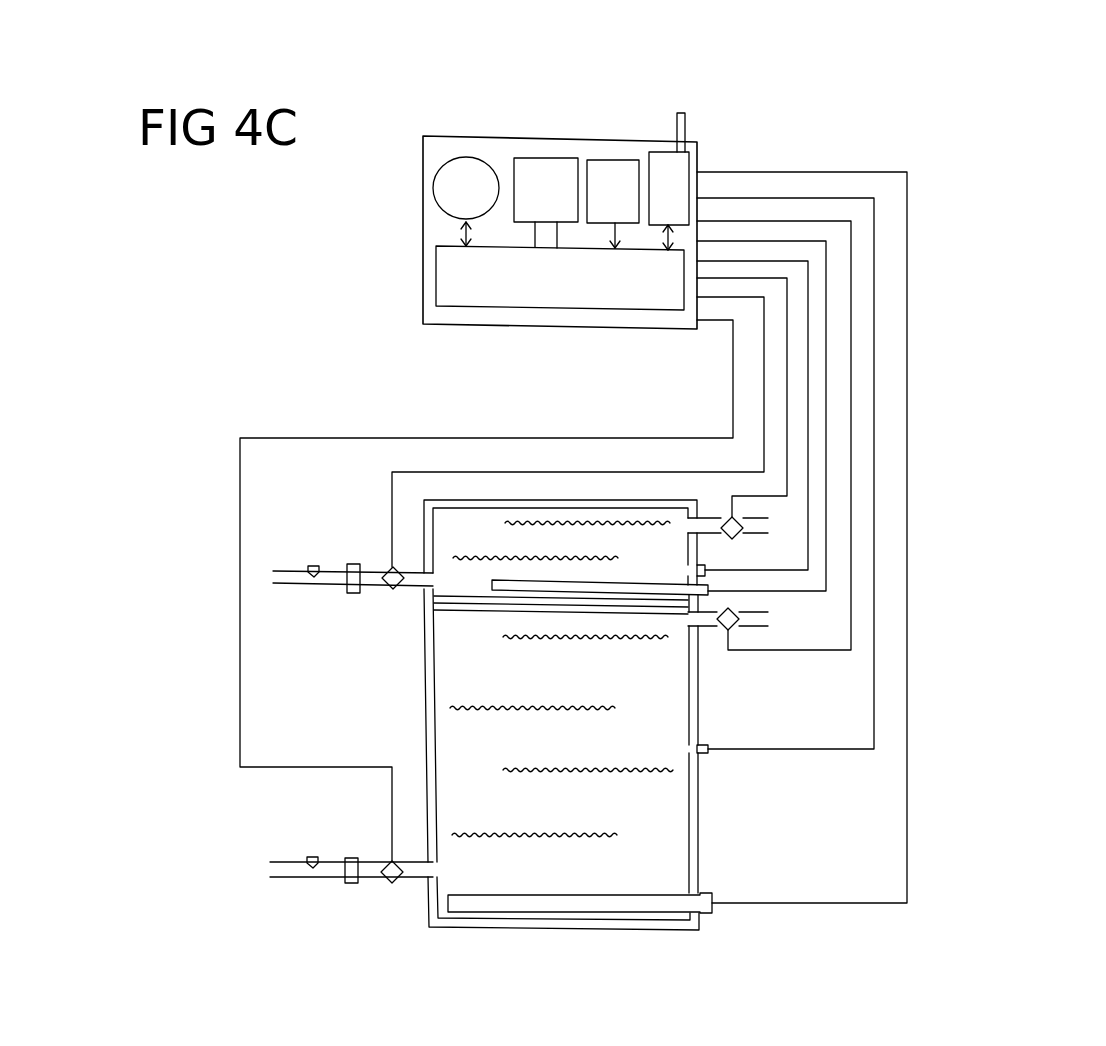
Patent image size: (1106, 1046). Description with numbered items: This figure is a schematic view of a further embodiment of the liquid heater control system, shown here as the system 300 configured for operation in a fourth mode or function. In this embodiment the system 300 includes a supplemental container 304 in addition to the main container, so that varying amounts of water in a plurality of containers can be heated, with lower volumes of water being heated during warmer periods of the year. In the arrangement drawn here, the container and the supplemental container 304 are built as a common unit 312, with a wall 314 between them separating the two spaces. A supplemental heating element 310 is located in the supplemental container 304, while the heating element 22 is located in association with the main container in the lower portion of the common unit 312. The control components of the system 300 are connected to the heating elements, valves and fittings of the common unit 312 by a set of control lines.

The system 300 is at (952, 200).
The supplemental container 304 is at (492, 537).
The supplemental heating element 310 is at (578, 588).
The common unit 312 is at (427, 682).
The wall 314 is at (463, 598).
The heating element 22 is at (648, 903).